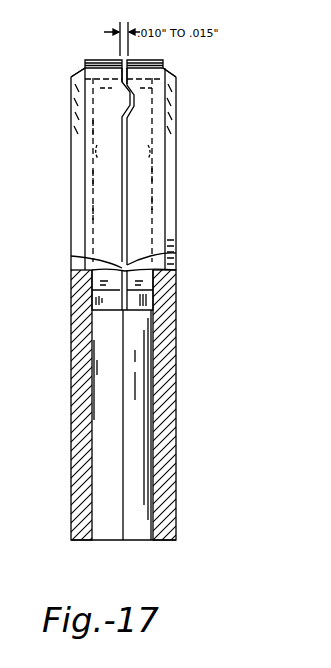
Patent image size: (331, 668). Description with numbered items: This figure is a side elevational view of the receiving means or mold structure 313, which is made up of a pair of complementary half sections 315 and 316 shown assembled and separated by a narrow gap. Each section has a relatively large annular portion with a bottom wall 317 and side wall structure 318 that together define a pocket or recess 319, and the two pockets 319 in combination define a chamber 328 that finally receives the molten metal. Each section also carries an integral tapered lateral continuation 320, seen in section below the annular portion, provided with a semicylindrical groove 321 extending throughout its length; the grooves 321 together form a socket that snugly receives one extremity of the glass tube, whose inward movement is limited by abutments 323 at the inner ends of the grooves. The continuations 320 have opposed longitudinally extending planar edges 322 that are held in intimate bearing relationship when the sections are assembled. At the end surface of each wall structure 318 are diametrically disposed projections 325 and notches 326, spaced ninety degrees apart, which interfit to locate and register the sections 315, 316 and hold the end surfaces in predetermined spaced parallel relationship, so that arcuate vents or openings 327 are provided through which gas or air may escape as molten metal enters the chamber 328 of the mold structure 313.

The mold structure 313 is at (105, 59).
The half section 315 is at (96, 58).
The half section 316 is at (162, 61).
The bottom wall 317 is at (100, 152).
The side wall structure 318 is at (101, 178).
The pocket 319 is at (108, 213).
The tapered lateral continuation 320 is at (86, 376).
The semicylindrical groove 321 is at (96, 409).
The planar edge 322 is at (126, 467).
The abutment 323 is at (100, 304).
The projection 325 is at (122, 99).
The notch 326 is at (130, 97).
The vent 327 is at (80, 72).
The chamber 328 is at (100, 128).